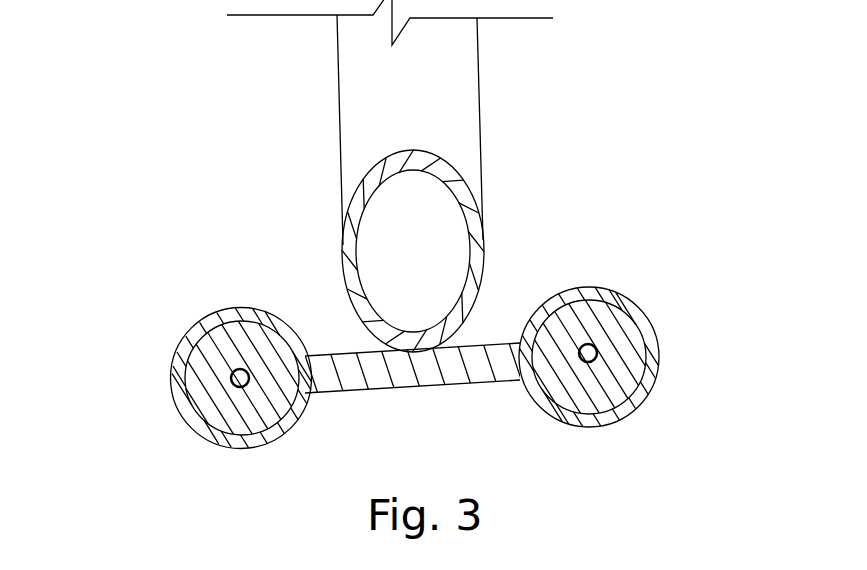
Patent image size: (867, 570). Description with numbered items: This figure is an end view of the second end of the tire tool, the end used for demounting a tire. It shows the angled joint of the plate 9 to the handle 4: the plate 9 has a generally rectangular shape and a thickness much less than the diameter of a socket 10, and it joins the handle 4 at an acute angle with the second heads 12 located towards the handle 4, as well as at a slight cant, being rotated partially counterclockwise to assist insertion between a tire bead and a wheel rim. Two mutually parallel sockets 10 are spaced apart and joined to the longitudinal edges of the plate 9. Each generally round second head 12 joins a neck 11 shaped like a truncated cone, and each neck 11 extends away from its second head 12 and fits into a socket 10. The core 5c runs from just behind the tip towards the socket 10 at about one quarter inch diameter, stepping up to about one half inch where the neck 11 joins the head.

The handle 4 is at (455, 130).
The plate 9 is at (485, 343).
The socket 10 is at (207, 323).
The neck 11 is at (172, 367).
The second head 12 is at (222, 442).
The core 5c is at (240, 378).